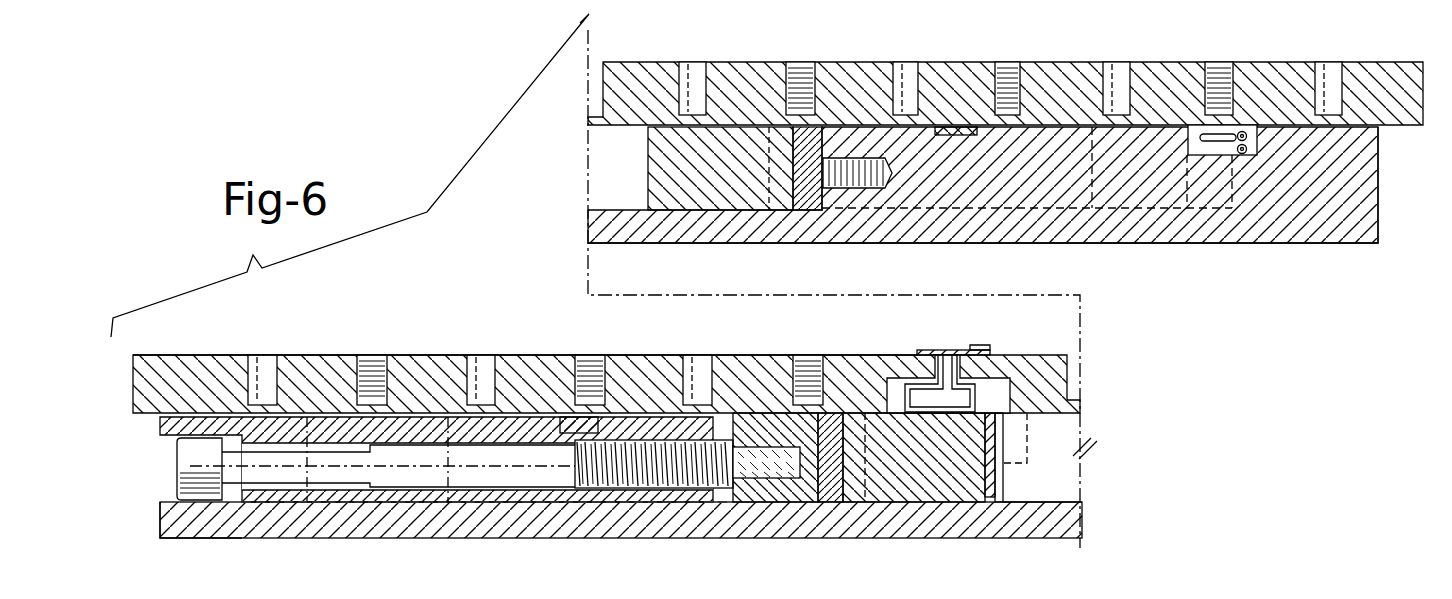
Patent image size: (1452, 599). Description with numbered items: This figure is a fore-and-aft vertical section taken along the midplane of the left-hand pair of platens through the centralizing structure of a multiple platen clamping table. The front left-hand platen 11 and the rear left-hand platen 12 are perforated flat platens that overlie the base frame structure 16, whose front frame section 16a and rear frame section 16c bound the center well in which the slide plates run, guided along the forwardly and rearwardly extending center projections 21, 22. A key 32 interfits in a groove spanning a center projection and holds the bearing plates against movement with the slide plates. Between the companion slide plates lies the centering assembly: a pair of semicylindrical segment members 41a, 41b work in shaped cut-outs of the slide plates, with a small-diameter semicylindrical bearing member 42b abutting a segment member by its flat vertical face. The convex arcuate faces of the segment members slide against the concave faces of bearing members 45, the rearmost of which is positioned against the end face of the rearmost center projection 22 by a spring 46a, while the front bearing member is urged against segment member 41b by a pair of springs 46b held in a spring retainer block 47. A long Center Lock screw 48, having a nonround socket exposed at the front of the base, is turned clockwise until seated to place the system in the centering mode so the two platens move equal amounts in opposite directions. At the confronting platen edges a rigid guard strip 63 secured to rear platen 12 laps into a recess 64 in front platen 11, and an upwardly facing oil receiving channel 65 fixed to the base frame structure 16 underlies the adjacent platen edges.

The front left-hand platen 11 is at (733, 355).
The rear left-hand platen 12 is at (1052, 62).
The base frame structure 16 is at (545, 540).
The front frame section 16a is at (168, 524).
The rear frame section 16c is at (1378, 188).
The forwardly extending center projection 21 is at (405, 419).
The rearwardly extending center projection 22 is at (1015, 197).
The key 32 is at (951, 127).
The semicylindrical segment member 41a is at (650, 180).
The semicylindrical segment member 41b is at (938, 492).
The semicylindrical bearing member 42b is at (1003, 493).
The bearing member 45 is at (812, 133).
The spring 46a is at (852, 188).
The springs 46b is at (760, 474).
The spring retainer block 47 is at (772, 493).
The Center Lock screw 48 is at (187, 467).
The guard strip 63 is at (950, 352).
The recess 64 is at (882, 352).
The oil receiving and conveying channel 65 is at (1003, 417).